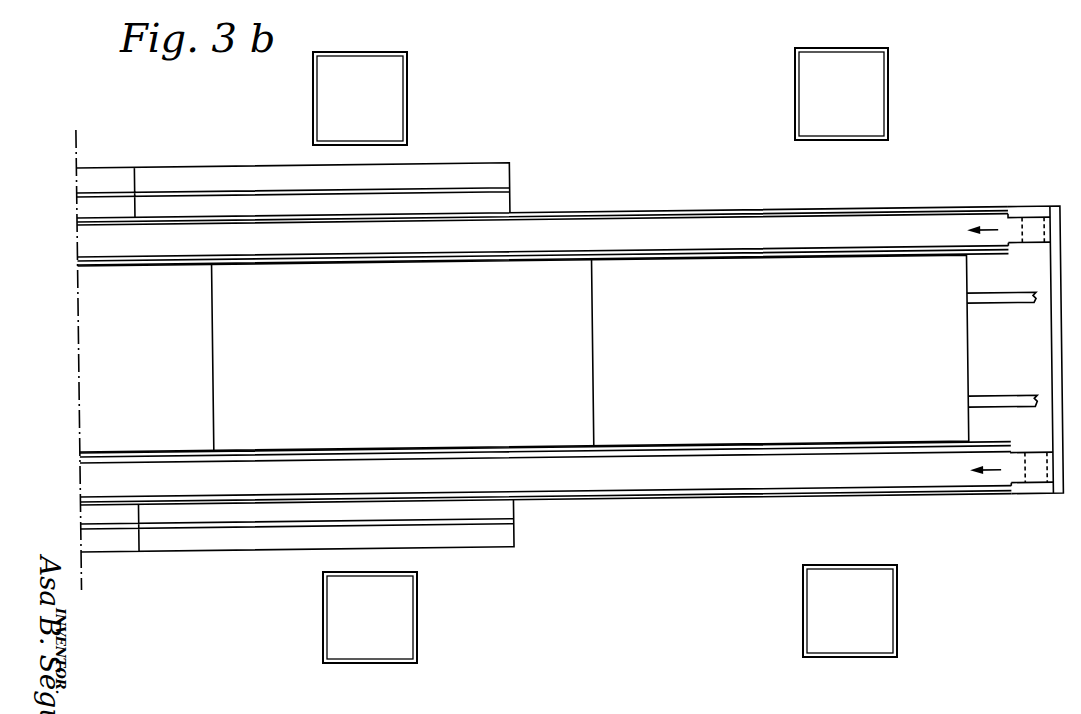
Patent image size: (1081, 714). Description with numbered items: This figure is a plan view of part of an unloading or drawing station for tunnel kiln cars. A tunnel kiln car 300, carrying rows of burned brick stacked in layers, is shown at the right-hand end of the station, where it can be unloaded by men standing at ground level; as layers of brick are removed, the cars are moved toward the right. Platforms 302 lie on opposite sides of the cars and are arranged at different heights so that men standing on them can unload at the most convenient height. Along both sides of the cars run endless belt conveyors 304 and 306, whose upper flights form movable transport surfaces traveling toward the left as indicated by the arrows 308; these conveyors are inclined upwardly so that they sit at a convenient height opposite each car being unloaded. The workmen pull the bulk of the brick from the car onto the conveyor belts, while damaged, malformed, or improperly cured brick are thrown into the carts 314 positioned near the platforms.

The tunnel kiln car 300 is at (88, 318).
The platform 302 is at (105, 168).
The conveyor 304 is at (898, 226).
The conveyor 306 is at (913, 477).
The arrow 308 is at (987, 230).
The cart 314 is at (390, 90).